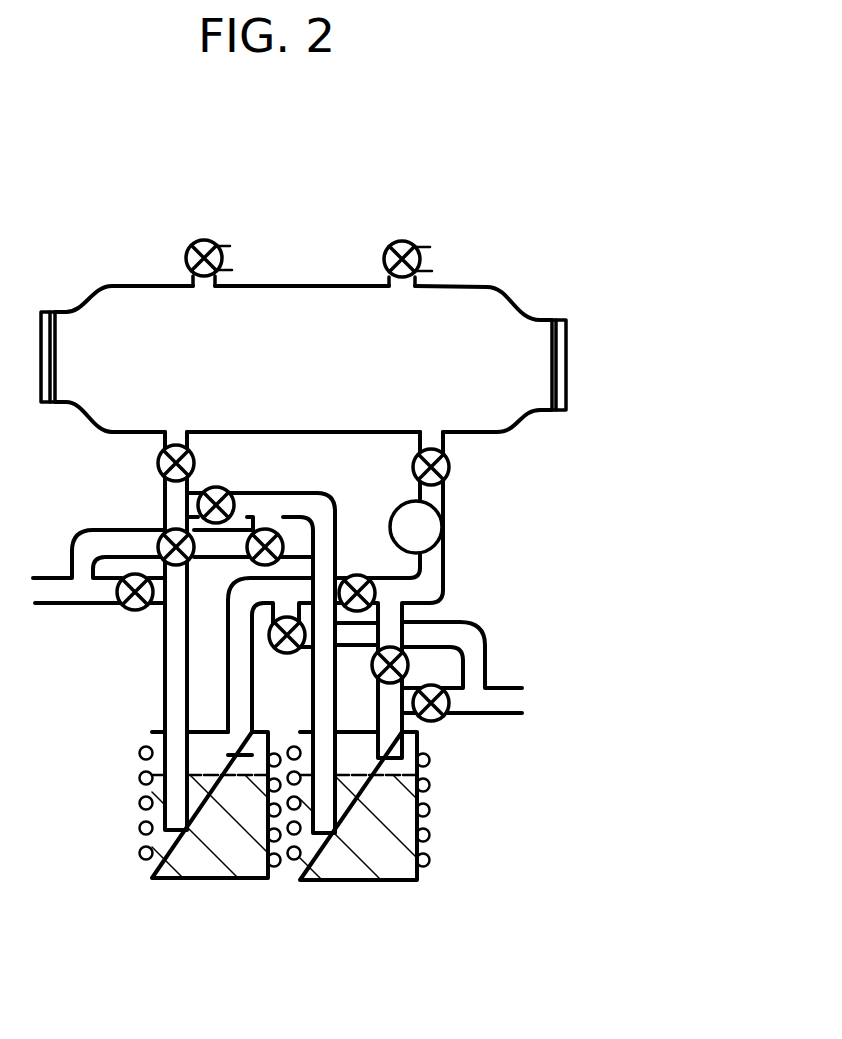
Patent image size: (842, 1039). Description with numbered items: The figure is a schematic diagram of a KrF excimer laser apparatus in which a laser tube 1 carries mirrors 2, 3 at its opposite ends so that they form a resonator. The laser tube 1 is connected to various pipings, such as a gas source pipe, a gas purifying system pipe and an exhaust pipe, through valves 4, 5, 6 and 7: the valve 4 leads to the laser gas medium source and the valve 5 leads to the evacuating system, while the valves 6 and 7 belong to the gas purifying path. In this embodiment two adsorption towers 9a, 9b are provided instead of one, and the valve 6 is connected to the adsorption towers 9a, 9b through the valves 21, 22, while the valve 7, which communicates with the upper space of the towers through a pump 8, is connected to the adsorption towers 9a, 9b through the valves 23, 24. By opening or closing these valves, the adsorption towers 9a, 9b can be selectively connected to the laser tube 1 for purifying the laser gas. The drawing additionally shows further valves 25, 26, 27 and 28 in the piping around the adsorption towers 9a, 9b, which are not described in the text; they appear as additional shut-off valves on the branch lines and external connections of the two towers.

The laser tube 1 is at (512, 299).
The mirror 2 is at (45, 323).
The mirror 3 is at (558, 329).
The valve 4 is at (205, 240).
The valve 5 is at (402, 241).
The valve 6 is at (158, 463).
The valve 7 is at (450, 465).
The pump 8 is at (442, 530).
The adsorption tower 9a is at (141, 812).
The adsorption tower 9b is at (436, 822).
The valve 21 is at (170, 530).
The valve 22 is at (218, 490).
The valve 23 is at (357, 576).
The valve 24 is at (398, 668).
The valve 25 is at (135, 611).
The valve 26 is at (263, 528).
The valve 27 is at (285, 654).
The valve 28 is at (437, 720).